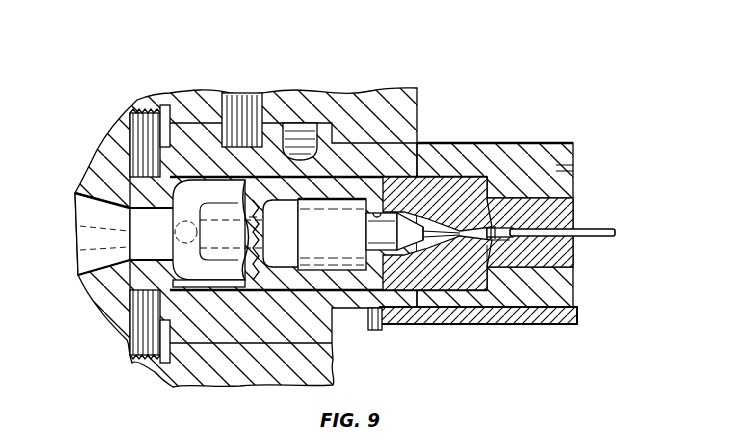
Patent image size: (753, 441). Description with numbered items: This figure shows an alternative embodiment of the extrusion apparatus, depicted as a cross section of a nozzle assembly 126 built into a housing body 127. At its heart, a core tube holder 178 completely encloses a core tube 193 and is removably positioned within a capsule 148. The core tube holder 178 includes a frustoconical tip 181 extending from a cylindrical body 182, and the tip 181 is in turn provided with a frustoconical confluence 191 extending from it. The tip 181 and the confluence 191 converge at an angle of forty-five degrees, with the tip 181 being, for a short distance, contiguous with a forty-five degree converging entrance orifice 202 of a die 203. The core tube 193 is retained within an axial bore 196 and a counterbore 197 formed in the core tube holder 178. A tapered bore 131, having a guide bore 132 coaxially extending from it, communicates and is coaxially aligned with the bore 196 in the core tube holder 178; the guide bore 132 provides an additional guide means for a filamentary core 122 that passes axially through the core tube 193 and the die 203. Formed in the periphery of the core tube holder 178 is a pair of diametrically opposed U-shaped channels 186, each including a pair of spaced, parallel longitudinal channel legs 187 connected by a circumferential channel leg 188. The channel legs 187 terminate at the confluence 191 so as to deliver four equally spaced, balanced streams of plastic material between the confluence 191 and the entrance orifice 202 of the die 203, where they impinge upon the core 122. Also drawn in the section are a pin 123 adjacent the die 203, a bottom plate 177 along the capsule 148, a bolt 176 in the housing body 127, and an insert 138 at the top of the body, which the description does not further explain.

The nozzle assembly 126 is at (342, 225).
The housing body 127 is at (277, 378).
The cylindrical body 182 is at (186, 97).
The insert 138 is at (238, 97).
The counterbore 197 is at (326, 200).
The axial bore 196 is at (381, 185).
The core tube holder 178 is at (420, 160).
The frustoconical tip 181 is at (445, 150).
The entrance orifice 202 is at (500, 152).
The capsule 148 is at (545, 145).
The guide bore 132 is at (565, 165).
The pin 123 is at (525, 222).
The die 203 is at (550, 240).
The bottom plate 177 is at (575, 318).
The filamentary core 122 is at (500, 245).
The frustoconical confluence 191 is at (497, 248).
The tapered bore 131 is at (432, 245).
The bolt 176 is at (383, 318).
The core tube 193 is at (348, 262).
The circumferential channel leg 188 is at (115, 268).
The U-shaped channel 186 is at (205, 282).
The longitudinal channel leg 187 is at (216, 270).